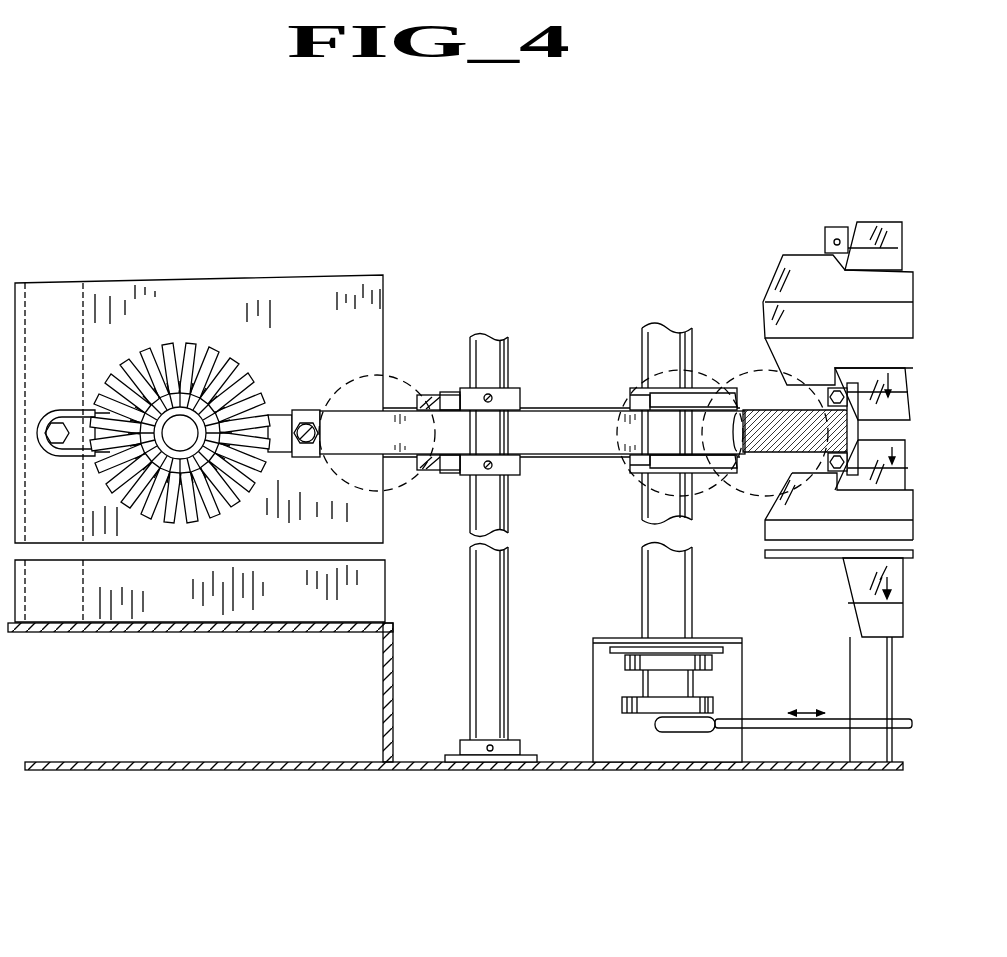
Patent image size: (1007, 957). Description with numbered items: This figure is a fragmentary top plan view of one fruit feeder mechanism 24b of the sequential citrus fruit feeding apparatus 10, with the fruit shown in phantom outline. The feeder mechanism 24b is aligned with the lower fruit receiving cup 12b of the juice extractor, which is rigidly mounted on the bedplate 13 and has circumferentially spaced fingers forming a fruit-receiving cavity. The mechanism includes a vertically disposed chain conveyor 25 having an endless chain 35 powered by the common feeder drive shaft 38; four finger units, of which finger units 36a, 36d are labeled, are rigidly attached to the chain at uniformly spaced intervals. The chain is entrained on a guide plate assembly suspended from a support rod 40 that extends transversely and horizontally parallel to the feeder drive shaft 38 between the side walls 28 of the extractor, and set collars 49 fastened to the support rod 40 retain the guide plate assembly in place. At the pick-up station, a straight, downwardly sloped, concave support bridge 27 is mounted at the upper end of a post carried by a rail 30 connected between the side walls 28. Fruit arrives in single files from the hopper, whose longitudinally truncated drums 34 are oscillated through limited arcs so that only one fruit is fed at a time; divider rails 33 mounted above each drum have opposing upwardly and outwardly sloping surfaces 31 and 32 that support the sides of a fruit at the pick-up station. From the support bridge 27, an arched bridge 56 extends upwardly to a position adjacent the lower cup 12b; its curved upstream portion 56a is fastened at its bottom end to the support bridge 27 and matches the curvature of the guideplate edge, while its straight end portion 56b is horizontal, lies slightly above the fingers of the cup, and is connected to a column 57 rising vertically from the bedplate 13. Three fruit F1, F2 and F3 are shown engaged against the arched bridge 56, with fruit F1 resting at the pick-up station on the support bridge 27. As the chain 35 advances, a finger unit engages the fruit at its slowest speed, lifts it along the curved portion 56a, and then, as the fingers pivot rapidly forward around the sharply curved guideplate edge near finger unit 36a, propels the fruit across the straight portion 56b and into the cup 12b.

The sequential citrus fruit feeding apparatus 10 is at (507, 295).
The lower fruit receiving cup 12b is at (232, 368).
The bedplate 13 is at (217, 314).
The fruit feeder mechanism 24b is at (585, 360).
The chain conveyor 25 is at (553, 460).
The support bridge 27 is at (786, 420).
The side wall 28 is at (425, 768).
The rail 30 is at (858, 649).
The upwardly and outwardly sloping surface 31 is at (793, 263).
The upwardly and outwardly sloping surface 32 is at (778, 356).
The divider rail 33 is at (763, 316).
The longitudinally truncated drum 34 is at (870, 218).
The endless chain 35 is at (555, 408).
The finger unit 36a is at (445, 368).
The finger unit 36d is at (648, 473).
The feeder drive shaft 38 is at (647, 520).
The support rod 40 is at (472, 530).
The set collar 49 is at (517, 393).
The arched bridge 56 is at (500, 439).
The curved upstream portion 56a is at (610, 417).
The straight end portion 56b is at (338, 447).
The column 57 is at (290, 403).
The fruit F1 is at (758, 512).
The fruit F2 is at (703, 495).
The fruit F3 is at (387, 332).